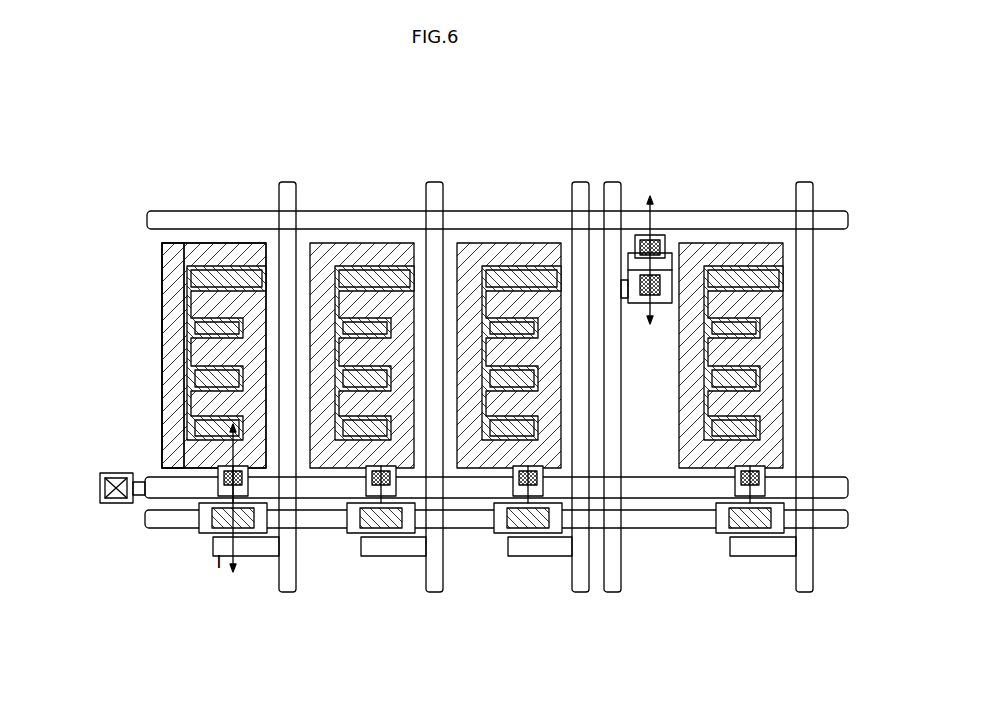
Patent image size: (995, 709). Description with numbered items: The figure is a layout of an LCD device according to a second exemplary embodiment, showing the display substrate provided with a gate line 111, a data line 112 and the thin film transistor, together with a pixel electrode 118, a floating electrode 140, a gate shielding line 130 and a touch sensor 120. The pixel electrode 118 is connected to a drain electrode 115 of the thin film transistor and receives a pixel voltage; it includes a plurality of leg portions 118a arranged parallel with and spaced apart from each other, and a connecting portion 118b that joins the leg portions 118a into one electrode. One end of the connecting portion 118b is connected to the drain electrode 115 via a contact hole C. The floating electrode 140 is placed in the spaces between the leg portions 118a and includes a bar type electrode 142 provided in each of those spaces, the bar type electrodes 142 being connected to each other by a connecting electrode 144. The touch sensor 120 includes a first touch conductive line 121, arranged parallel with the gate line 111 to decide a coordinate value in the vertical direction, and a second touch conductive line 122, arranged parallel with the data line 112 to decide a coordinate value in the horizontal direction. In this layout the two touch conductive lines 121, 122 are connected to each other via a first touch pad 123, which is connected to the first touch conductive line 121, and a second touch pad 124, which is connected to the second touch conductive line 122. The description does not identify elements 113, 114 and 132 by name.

The gate line 111 is at (315, 530).
The data line 112 is at (288, 593).
The drain electrode 113 is at (208, 538).
The source electrode 114 is at (243, 549).
The drain electrode 115 is at (199, 522).
The pixel electrode 118 is at (75, 320).
The leg portion 118a is at (186, 354).
The connecting portion 118b is at (178, 336).
The touch sensor 120 is at (692, 240).
The first touch conductive line 121 is at (497, 211).
The second touch conductive line 122 is at (612, 182).
The first touch pad 123 is at (665, 280).
The second touch pad 124 is at (679, 275).
The gate shielding line 130 is at (327, 498).
The pad 132 is at (100, 488).
The floating electrode 140 is at (214, 300).
The bar type electrode 142 is at (207, 273).
The connecting electrode 144 is at (255, 300).
The contact hole C is at (218, 478).